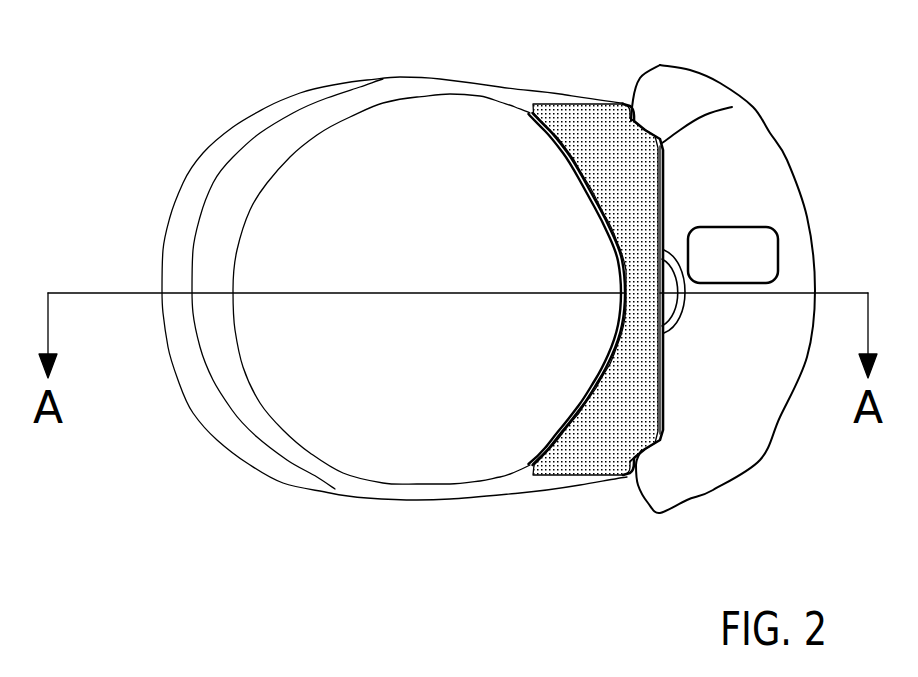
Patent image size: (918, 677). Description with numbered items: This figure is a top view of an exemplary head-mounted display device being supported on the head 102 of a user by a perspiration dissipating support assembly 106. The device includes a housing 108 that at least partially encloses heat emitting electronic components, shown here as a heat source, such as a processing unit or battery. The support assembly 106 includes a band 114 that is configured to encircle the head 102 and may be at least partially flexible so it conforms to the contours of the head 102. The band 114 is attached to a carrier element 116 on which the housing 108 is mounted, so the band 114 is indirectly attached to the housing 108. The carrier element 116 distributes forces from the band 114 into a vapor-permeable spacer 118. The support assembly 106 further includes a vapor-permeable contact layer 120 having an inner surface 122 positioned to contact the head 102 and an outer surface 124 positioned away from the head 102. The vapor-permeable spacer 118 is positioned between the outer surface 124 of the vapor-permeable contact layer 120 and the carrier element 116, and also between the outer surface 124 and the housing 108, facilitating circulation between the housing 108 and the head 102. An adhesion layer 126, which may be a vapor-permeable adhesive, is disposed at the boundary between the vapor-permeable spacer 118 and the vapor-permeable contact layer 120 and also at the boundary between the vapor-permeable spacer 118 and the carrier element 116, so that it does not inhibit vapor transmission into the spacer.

The head 102 is at (410, 219).
The perspiration dissipating support assembly 106 is at (631, 403).
The housing 108 is at (744, 191).
The band 114 is at (437, 80).
The carrier element 116 is at (733, 108).
The vapor-permeable spacer 118 is at (593, 458).
The vapor-permeable contact layer 120 is at (614, 241).
The inner surface 122 is at (553, 159).
The outer surface 124 is at (559, 116).
The adhesion layer 126 is at (562, 416).